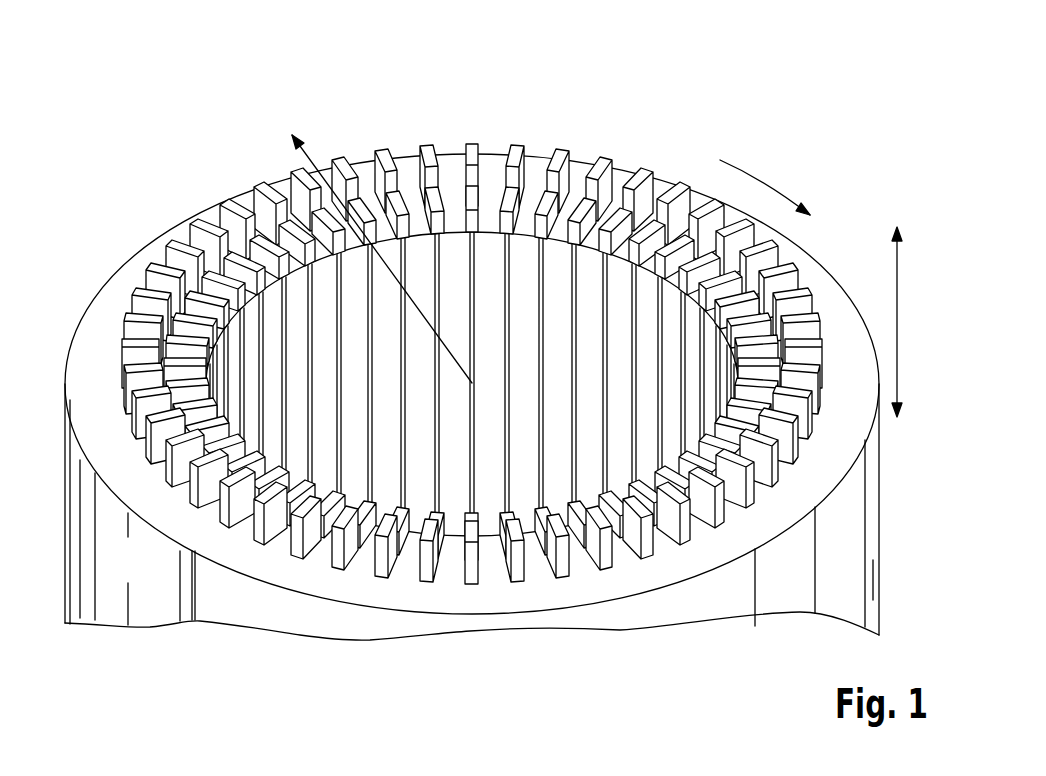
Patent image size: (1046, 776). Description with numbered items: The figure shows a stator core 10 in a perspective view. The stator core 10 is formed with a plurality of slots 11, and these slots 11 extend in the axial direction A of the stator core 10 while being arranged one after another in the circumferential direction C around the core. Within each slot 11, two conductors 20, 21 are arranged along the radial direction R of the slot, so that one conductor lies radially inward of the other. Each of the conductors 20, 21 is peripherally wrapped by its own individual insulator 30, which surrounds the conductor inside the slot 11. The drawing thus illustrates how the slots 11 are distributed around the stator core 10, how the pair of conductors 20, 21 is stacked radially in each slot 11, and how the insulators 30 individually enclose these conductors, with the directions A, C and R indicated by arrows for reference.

The stator core 10 is at (117, 312).
The slots 11 is at (472, 366).
The conductor 20 is at (345, 158).
The conductor 21 is at (360, 198).
The insulator 30 is at (182, 468).
The radial direction R is at (297, 193).
The circumferential direction C is at (767, 172).
The axial direction A is at (898, 322).